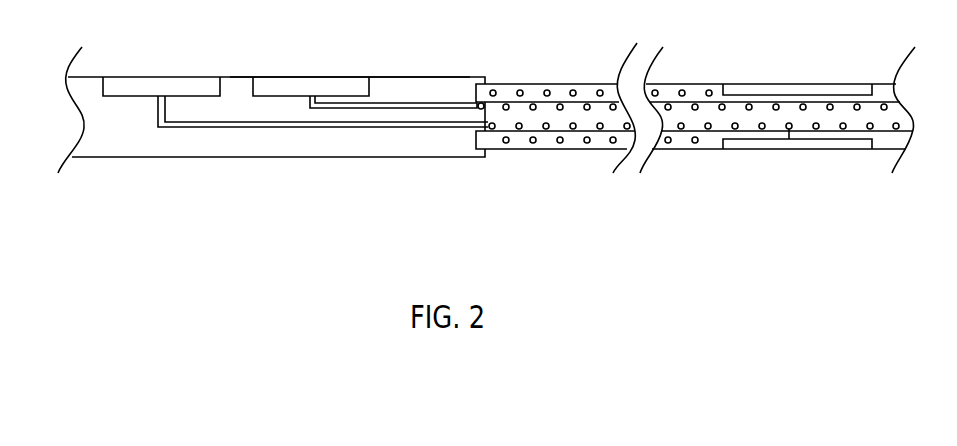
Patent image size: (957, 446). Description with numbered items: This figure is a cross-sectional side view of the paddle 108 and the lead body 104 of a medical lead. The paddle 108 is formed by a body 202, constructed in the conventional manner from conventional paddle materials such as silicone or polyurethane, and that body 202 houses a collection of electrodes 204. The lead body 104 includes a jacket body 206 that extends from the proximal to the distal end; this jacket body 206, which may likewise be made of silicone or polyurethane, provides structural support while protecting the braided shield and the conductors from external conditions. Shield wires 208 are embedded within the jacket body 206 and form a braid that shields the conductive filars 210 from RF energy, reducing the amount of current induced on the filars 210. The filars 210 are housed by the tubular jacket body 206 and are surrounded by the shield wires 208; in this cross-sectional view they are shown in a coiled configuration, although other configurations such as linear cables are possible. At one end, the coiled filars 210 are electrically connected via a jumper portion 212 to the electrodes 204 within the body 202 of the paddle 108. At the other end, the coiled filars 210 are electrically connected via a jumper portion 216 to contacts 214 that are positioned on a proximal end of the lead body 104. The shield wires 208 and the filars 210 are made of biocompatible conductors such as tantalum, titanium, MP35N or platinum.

The lead body 104 is at (552, 84).
The paddle 108 is at (405, 77).
The body 202 is at (138, 140).
The electrodes 204 is at (142, 86).
The jacket body 206 is at (510, 90).
The shield wires 208 is at (508, 143).
The filars 210 is at (546, 129).
The jumper portion 212 is at (289, 128).
The contacts 214 is at (747, 146).
The jumper portion 216 is at (789, 130).